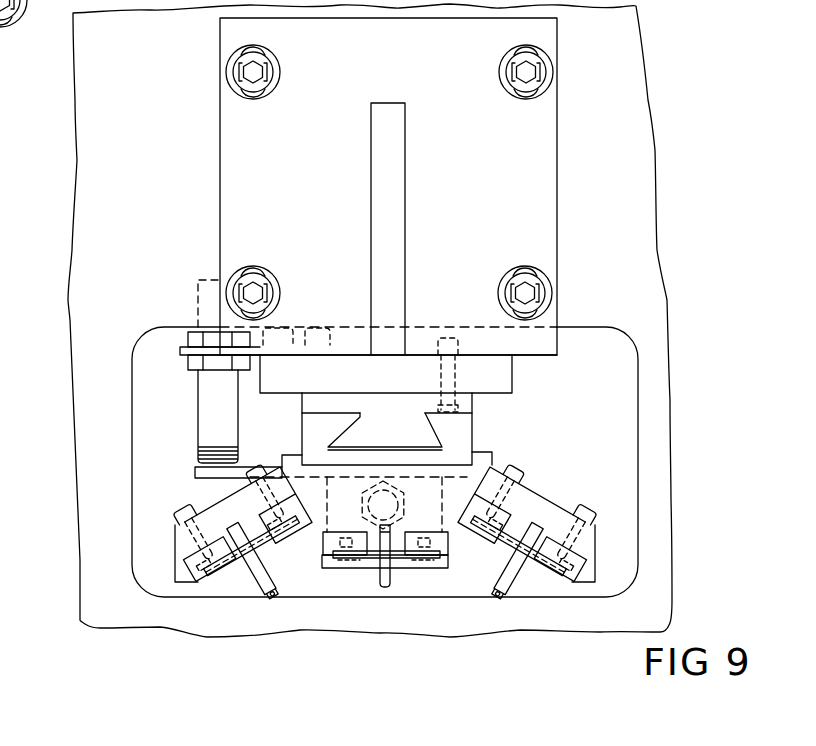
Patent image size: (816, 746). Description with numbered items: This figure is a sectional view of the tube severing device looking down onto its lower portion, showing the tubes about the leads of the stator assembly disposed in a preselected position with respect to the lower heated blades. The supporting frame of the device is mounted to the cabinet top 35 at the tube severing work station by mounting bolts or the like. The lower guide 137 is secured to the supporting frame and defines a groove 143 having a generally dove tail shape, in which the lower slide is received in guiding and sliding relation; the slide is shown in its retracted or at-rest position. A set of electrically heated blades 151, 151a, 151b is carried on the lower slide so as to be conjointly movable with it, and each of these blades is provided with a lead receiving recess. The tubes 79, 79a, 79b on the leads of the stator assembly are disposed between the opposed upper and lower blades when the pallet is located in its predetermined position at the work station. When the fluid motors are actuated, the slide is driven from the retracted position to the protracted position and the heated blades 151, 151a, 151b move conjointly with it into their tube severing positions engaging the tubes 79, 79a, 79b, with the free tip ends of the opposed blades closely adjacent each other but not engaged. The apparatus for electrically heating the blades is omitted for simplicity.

The cabinet top 35 is at (86, 166).
The lower guide 137 is at (463, 437).
The groove 143 is at (437, 432).
The heated blade 151 is at (207, 577).
The tube 79 is at (262, 588).
The heated blade 151a is at (330, 570).
The tube 79a is at (392, 570).
The tube 79b is at (508, 578).
The heated blade 151b is at (572, 592).